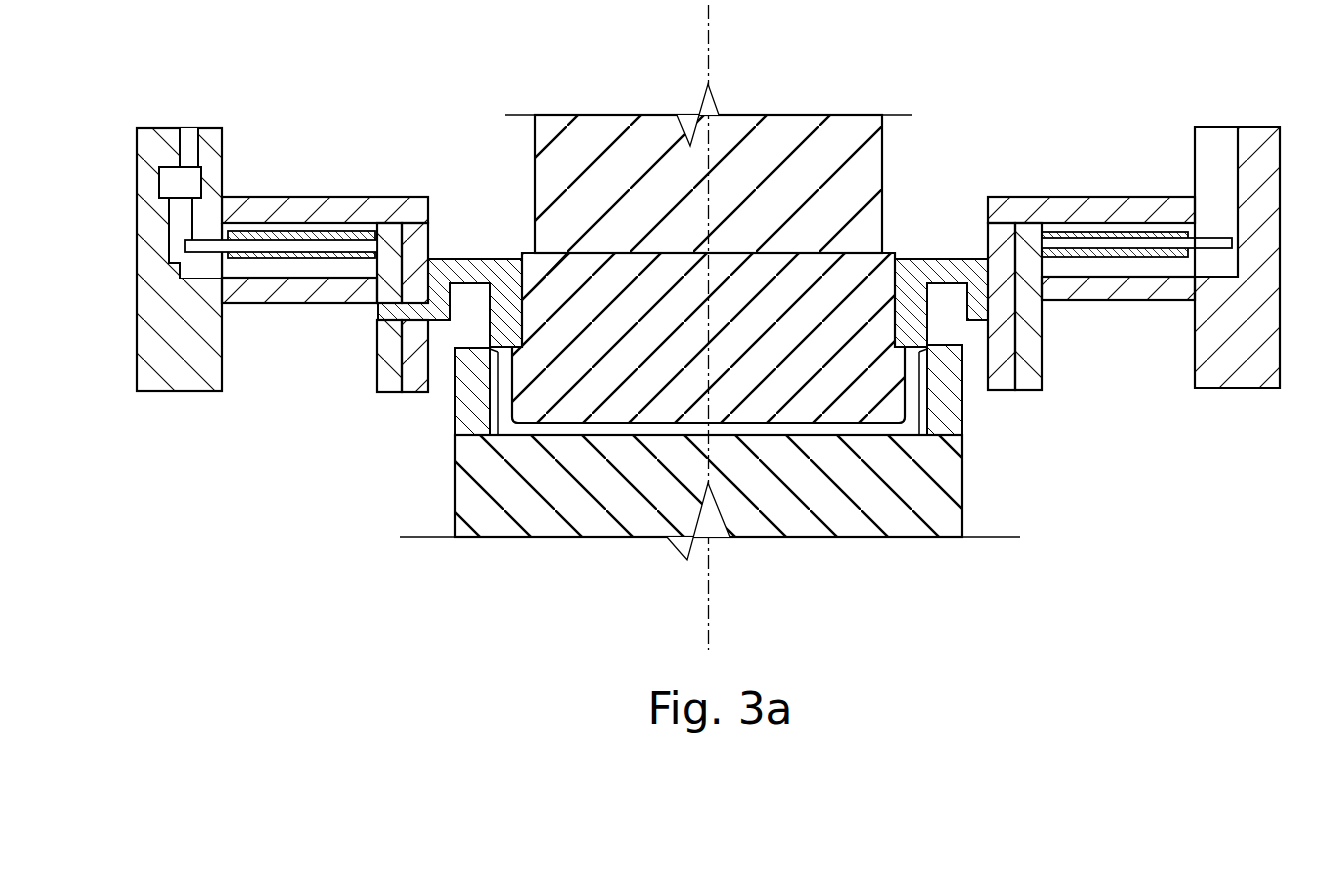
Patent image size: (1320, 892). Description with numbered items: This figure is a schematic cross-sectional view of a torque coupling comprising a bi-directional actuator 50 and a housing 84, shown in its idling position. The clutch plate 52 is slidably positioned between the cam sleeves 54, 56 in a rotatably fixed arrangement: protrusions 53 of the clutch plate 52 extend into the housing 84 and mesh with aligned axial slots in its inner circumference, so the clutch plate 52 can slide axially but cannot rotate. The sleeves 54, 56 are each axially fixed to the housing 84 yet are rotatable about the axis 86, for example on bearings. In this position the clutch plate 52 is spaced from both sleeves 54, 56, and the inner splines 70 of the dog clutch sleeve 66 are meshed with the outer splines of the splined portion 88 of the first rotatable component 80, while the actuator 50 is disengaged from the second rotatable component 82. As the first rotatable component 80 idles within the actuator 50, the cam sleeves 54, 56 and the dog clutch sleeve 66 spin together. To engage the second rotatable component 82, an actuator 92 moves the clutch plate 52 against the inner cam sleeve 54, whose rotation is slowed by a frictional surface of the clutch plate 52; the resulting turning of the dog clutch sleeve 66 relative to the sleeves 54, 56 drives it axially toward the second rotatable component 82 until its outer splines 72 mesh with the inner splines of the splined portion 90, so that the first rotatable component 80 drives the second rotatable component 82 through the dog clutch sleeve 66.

The actuator 50 is at (1129, 416).
The clutch plate 52 is at (337, 247).
The protrusions 53 is at (198, 238).
The inner cam sleeve 54 is at (308, 203).
The cam sleeve 56 is at (305, 295).
The dog clutch sleeve 66 is at (461, 285).
The inner splines 70 is at (483, 292).
The outer splines 72 is at (473, 260).
The first rotatable component 80 is at (853, 115).
The second rotatable component 82 is at (877, 547).
The housing 84 is at (155, 140).
The axis 86 is at (710, 78).
The splined portion 88 is at (527, 272).
The splined portion 90 is at (470, 406).
The actuator 92 is at (190, 172).